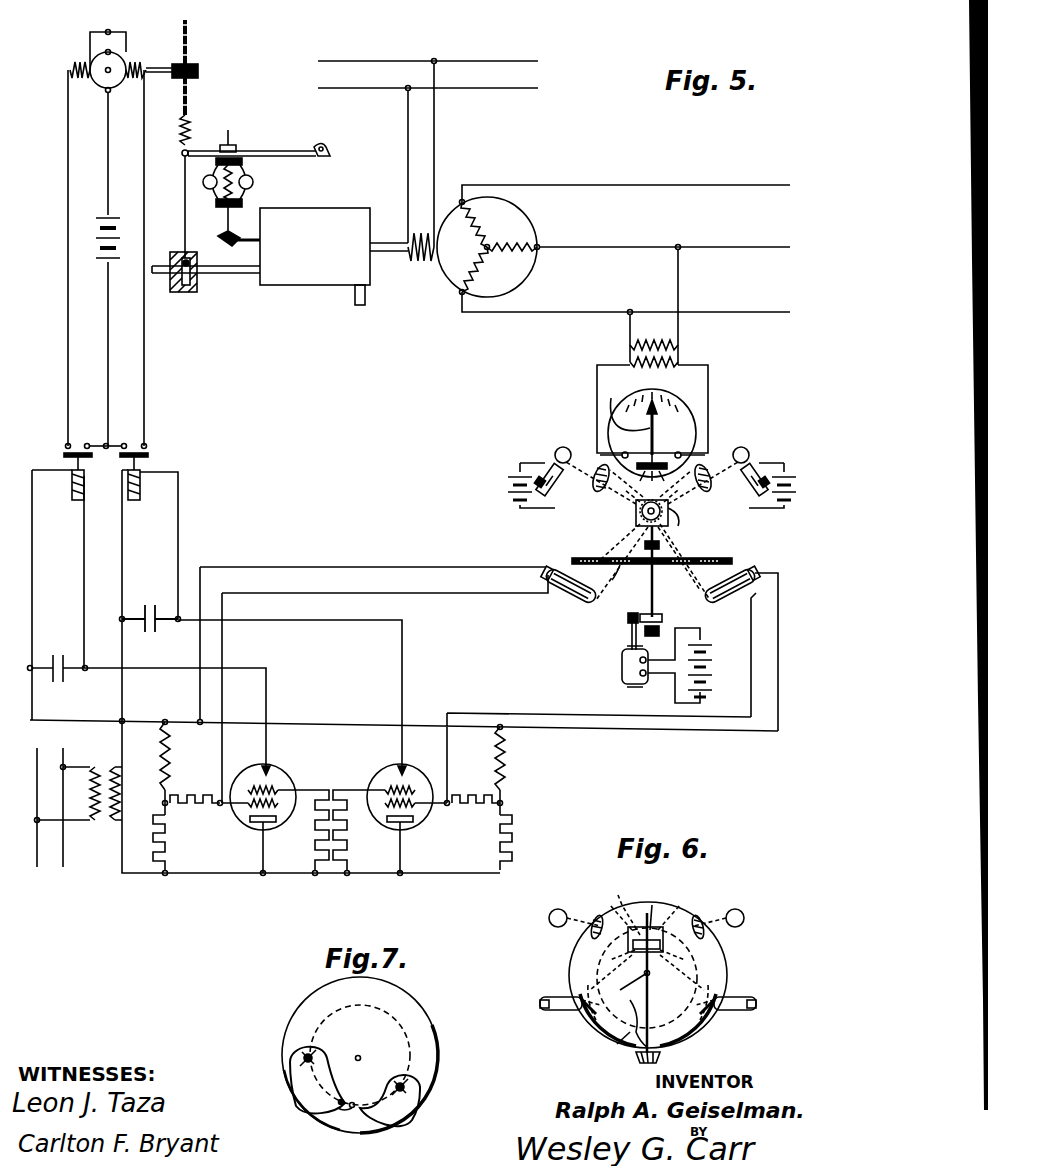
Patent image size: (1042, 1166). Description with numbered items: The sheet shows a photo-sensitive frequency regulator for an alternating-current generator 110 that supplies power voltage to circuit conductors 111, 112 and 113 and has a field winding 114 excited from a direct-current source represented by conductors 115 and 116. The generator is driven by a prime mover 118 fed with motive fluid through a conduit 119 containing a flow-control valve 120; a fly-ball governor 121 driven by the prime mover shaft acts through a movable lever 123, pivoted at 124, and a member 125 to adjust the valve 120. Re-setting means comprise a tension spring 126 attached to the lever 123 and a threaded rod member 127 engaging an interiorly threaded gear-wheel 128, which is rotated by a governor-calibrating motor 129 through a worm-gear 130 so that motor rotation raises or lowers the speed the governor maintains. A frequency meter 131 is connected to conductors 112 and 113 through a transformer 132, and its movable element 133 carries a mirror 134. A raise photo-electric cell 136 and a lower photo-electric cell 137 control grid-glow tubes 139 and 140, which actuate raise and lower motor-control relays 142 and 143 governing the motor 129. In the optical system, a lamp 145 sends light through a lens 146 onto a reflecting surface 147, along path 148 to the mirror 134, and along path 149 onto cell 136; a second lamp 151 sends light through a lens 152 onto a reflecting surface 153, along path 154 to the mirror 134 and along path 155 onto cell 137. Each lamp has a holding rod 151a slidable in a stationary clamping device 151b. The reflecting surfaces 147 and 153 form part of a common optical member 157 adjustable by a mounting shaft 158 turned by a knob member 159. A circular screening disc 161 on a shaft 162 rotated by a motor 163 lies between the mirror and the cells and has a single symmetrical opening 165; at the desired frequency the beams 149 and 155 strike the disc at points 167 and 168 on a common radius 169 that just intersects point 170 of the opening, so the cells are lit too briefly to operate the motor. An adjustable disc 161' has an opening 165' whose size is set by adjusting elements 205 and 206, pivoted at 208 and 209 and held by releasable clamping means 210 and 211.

In FIG. 5, the alternating-current generator 110 is at (498, 175).
In FIG. 5, the circuit conductor 111 is at (678, 182).
In FIG. 5, the circuit conductor 112 is at (708, 245).
In FIG. 5, the circuit conductor 113 is at (736, 309).
In FIG. 5, the field winding 114 is at (418, 266).
In FIG. 5, the direct-current conductor 115 is at (480, 58).
In FIG. 5, the direct-current conductor 116 is at (492, 94).
In FIG. 5, the prime mover 118 is at (355, 199).
In FIG. 5, the conduit 119 is at (225, 276).
In FIG. 5, the flow-control valve 120 is at (190, 292).
In FIG. 5, the fly-ball governor 121 is at (246, 178).
In FIG. 5, the movable lever 123 is at (250, 150).
In FIG. 5, the pivot 124 is at (322, 146).
In FIG. 5, the member 125 is at (184, 203).
In FIG. 5, the tension spring 126 is at (190, 124).
In FIG. 5, the threaded rod member 127 is at (190, 90).
In FIG. 5, the interiorly threaded gear-wheel 128 is at (196, 64).
In FIG. 5, the governor-calibrating motor 129 is at (128, 25).
In FIG. 5, the worm-gear 130 is at (176, 64).
In FIG. 5, the frequency meter 131 is at (668, 404).
In FIG. 5, the transformer 132 is at (680, 350).
In FIG. 5, the movable element 133 is at (625, 403).
In FIG. 5, the mirror 134 is at (670, 462).
In FIG. 6, the mirror 134 is at (646, 977).
In FIG. 5, the raise photo-electric cell 136 is at (574, 598).
In FIG. 6, the raise photo-electric cell 136 is at (572, 1010).
In FIG. 5, the lower photo-electric cell 137 is at (720, 598).
In FIG. 6, the lower photo-electric cell 137 is at (722, 1010).
In FIG. 5, the grid-glow tube 139 is at (314, 767).
In FIG. 5, the grid-glow tube 140 is at (440, 767).
In FIG. 5, the raise motor-control relay 142 is at (72, 529).
In FIG. 5, the lower motor-control relay 143 is at (166, 529).
In FIG. 5, the lamp 145 is at (750, 452).
In FIG. 6, the lamp 145 is at (742, 910).
In FIG. 5, the lens 146 is at (708, 492).
In FIG. 6, the lens 146 is at (700, 915).
In FIG. 5, the reflecting surface 147 is at (668, 504).
In FIG. 6, the reflecting surface 147 is at (666, 948).
In FIG. 5, the light path 148 is at (662, 496).
In FIG. 6, the light path 148 is at (670, 898).
In FIG. 5, the light path 149 is at (612, 534).
In FIG. 6, the light path 149 is at (590, 964).
In FIG. 5, the lamp 151 is at (576, 444).
In FIG. 6, the lamp 151 is at (556, 909).
In FIG. 5, the holding rod 151a is at (556, 520).
In FIG. 5, the clamping device 151b is at (542, 478).
In FIG. 5, the lens 152 is at (598, 492).
In FIG. 6, the lens 152 is at (596, 914).
In FIG. 5, the reflecting surface 153 is at (636, 505).
In FIG. 6, the reflecting surface 153 is at (630, 950).
In FIG. 5, the light path 154 is at (642, 492).
In FIG. 6, the light path 154 is at (616, 896).
In FIG. 5, the light path 155 is at (690, 538).
In FIG. 6, the light path 155 is at (704, 964).
In FIG. 5, the optical member 157 is at (656, 526).
In FIG. 6, the optical member 157 is at (634, 900).
In FIG. 5, the mounting shaft 158 is at (670, 514).
In FIG. 6, the mounting shaft 158 is at (650, 888).
In FIG. 5, the knob member 159 is at (628, 538).
In FIG. 6, the knob member 159 is at (634, 1058).
In FIG. 5, the circular disc 161 is at (674, 553).
In FIG. 6, the circular disc 161 is at (667, 975).
In FIG. 7, the adjustable-opening screening disc 161' is at (385, 1055).
In FIG. 5, the shaft 162 is at (654, 588).
In FIG. 6, the shaft 162 is at (650, 975).
In FIG. 7, the shaft 162 is at (360, 1054).
In FIG. 5, the motor 163 is at (620, 668).
In FIG. 5, the opening 165 is at (620, 579).
In FIG. 6, the opening 165 is at (609, 1043).
In FIG. 7, the opening 165' is at (331, 1129).
In FIG. 6, the point 167 is at (588, 988).
In FIG. 6, the point 168 is at (708, 988).
In FIG. 6, the common radius 169 is at (695, 1035).
In FIG. 7, the common radius 169 is at (398, 1022).
In FIG. 6, the point 170 is at (630, 1000).
In FIG. 7, the adjusting element 205 is at (386, 1128).
In FIG. 7, the adjusting element 206 is at (312, 1110).
In FIG. 7, the pivot 208 is at (352, 1103).
In FIG. 7, the pivot 209 is at (341, 1100).
In FIG. 7, the releasable clamping means 210 is at (404, 1087).
In FIG. 7, the releasable clamping means 211 is at (304, 1058).